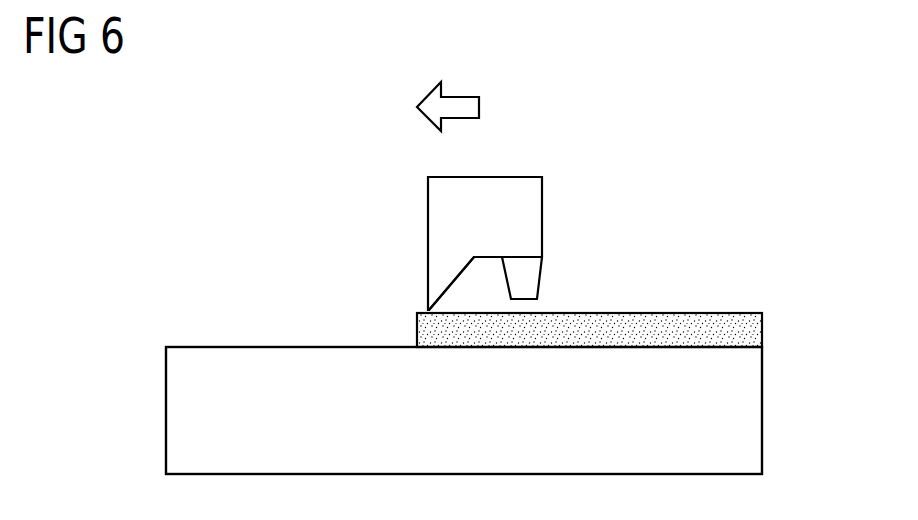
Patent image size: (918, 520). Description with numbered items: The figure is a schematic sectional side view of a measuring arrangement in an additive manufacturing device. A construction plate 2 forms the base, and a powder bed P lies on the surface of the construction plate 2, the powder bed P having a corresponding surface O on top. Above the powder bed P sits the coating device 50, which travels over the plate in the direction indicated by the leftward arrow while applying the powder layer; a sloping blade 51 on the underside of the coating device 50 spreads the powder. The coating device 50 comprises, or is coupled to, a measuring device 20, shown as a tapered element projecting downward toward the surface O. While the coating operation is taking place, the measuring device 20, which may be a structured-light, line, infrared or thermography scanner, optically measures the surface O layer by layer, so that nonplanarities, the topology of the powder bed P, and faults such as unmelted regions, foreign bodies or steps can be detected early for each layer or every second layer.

The construction plate 2 is at (747, 423).
The powder bed P is at (747, 329).
The surface of the powder bed O is at (691, 310).
The coating device 50 is at (525, 218).
The blade/wedge of coater 51 is at (437, 280).
The measuring device 20 is at (525, 281).